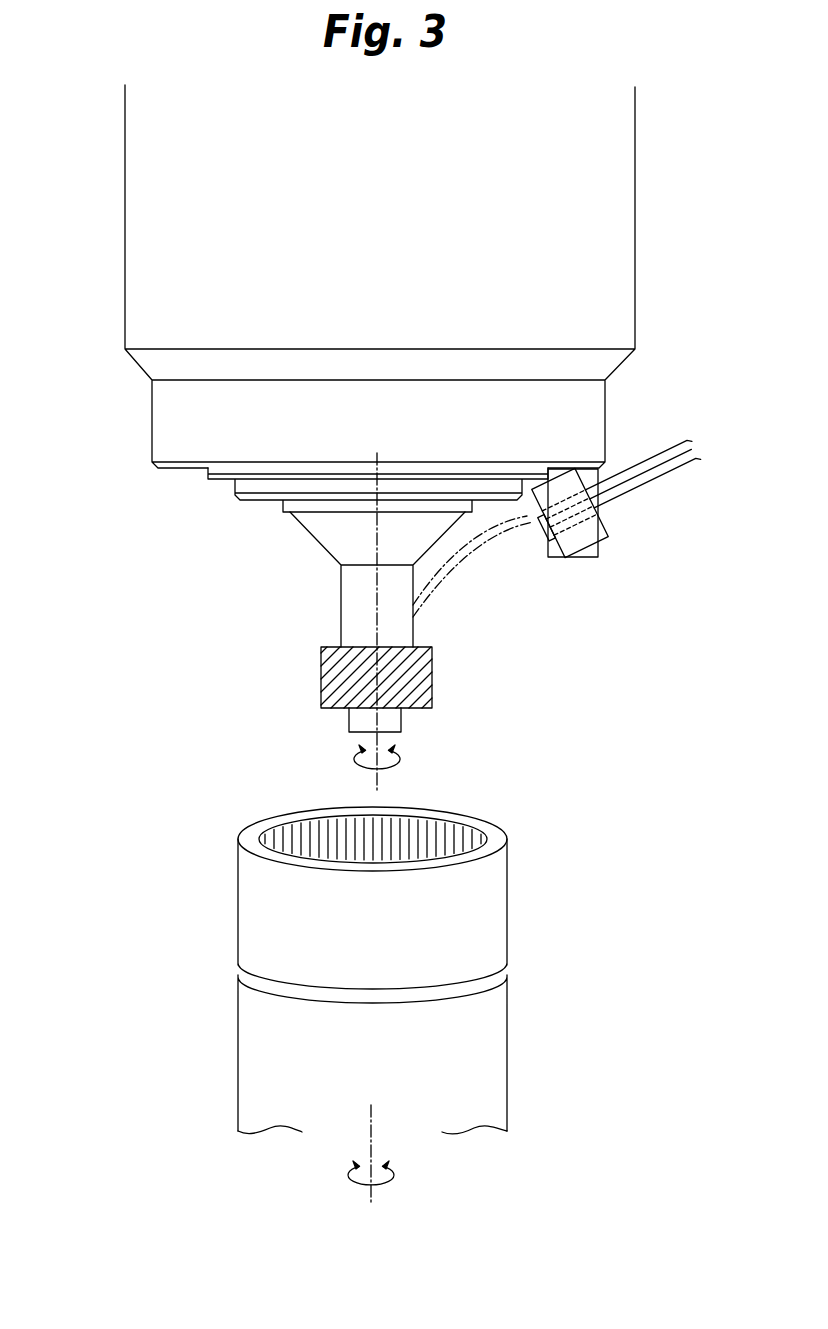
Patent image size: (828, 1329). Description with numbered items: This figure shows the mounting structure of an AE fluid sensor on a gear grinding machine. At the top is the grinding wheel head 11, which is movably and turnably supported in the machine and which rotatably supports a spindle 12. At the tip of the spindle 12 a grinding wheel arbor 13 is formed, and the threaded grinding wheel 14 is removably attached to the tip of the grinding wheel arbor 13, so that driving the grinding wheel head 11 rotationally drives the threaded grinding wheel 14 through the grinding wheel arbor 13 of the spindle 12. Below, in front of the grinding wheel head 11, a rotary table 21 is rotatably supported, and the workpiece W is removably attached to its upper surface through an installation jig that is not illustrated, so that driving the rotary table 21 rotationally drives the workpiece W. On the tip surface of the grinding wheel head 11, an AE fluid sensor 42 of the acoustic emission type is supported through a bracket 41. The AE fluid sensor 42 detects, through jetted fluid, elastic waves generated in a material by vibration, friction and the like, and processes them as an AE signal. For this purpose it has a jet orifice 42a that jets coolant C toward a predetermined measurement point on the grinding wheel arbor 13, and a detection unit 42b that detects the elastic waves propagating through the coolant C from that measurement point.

The grinding wheel head 11 is at (152, 424).
The spindle 12 is at (235, 487).
The grinding wheel arbor 13 is at (341, 606).
The threaded grinding wheel 14 is at (321, 680).
The bracket 41 is at (587, 560).
The AE fluid sensor 42 is at (610, 537).
The jet orifice 42a is at (531, 519).
The detection unit 42b is at (541, 540).
The coolant C is at (445, 590).
The workpiece W is at (508, 897).
The rotary table 21 is at (508, 1040).